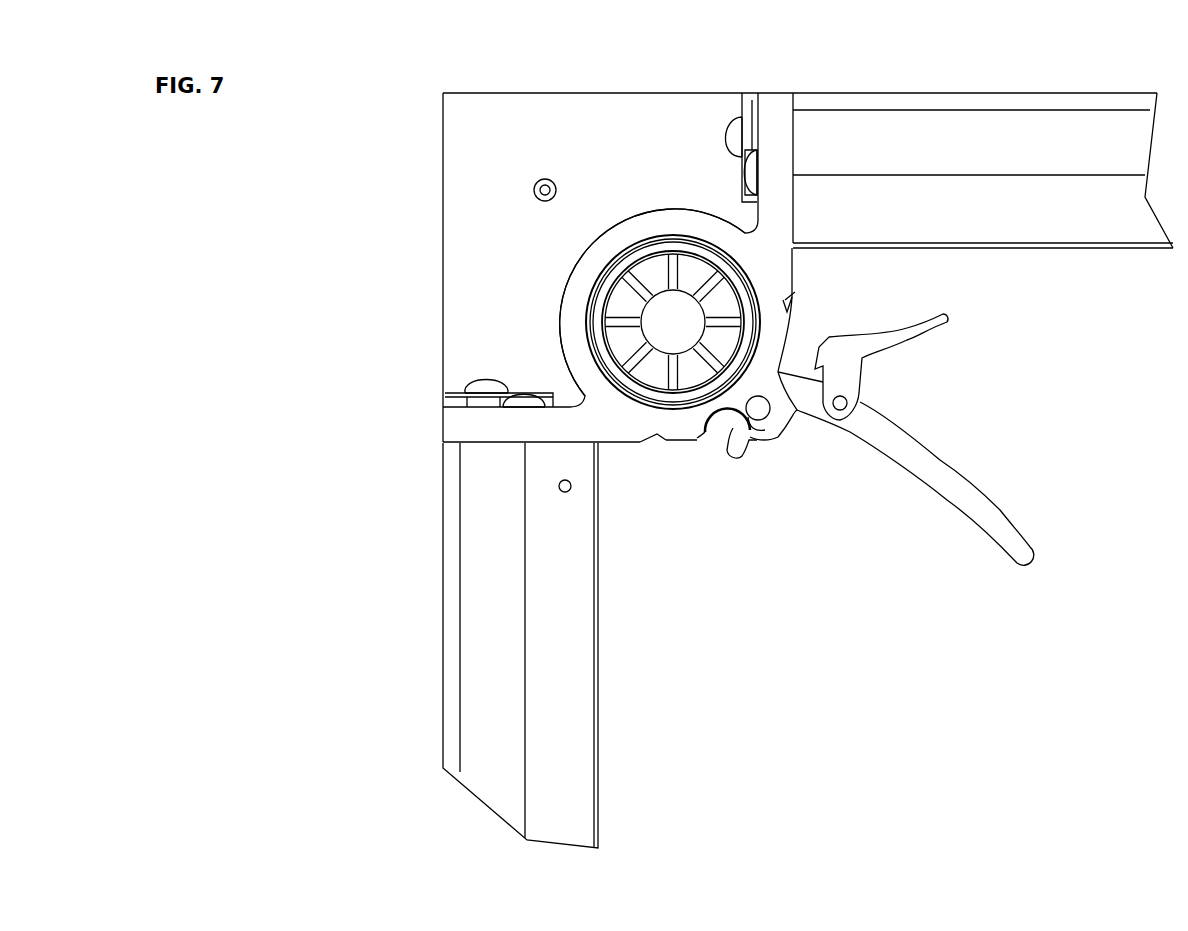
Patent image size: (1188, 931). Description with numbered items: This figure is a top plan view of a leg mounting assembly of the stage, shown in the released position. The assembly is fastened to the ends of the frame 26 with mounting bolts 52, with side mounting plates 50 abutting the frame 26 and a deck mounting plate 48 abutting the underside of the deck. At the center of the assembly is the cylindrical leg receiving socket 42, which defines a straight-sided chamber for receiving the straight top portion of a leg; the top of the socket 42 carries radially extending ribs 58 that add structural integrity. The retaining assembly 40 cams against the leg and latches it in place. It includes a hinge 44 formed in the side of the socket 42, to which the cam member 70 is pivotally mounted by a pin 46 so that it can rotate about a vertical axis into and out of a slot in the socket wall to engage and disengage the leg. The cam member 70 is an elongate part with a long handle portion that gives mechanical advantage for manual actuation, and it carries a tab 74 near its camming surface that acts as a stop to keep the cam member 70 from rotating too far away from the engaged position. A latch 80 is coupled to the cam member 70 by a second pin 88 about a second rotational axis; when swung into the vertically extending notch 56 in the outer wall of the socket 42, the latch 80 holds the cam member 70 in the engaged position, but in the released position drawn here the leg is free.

The frame 26 is at (1023, 105).
The retaining assembly 40 is at (852, 562).
The leg receiving socket 42 is at (645, 222).
The hinge 44 is at (705, 432).
The pin 46 is at (762, 412).
The deck mounting plate 48 is at (523, 236).
The side mounting plates 50 is at (773, 108).
The mounting bolts 52 is at (752, 170).
The notch 56 is at (790, 305).
The ribs 58 is at (643, 275).
The cam member 70 is at (1022, 555).
The tab 74 is at (737, 452).
The latch 80 is at (948, 320).
The pin 88 is at (845, 402).